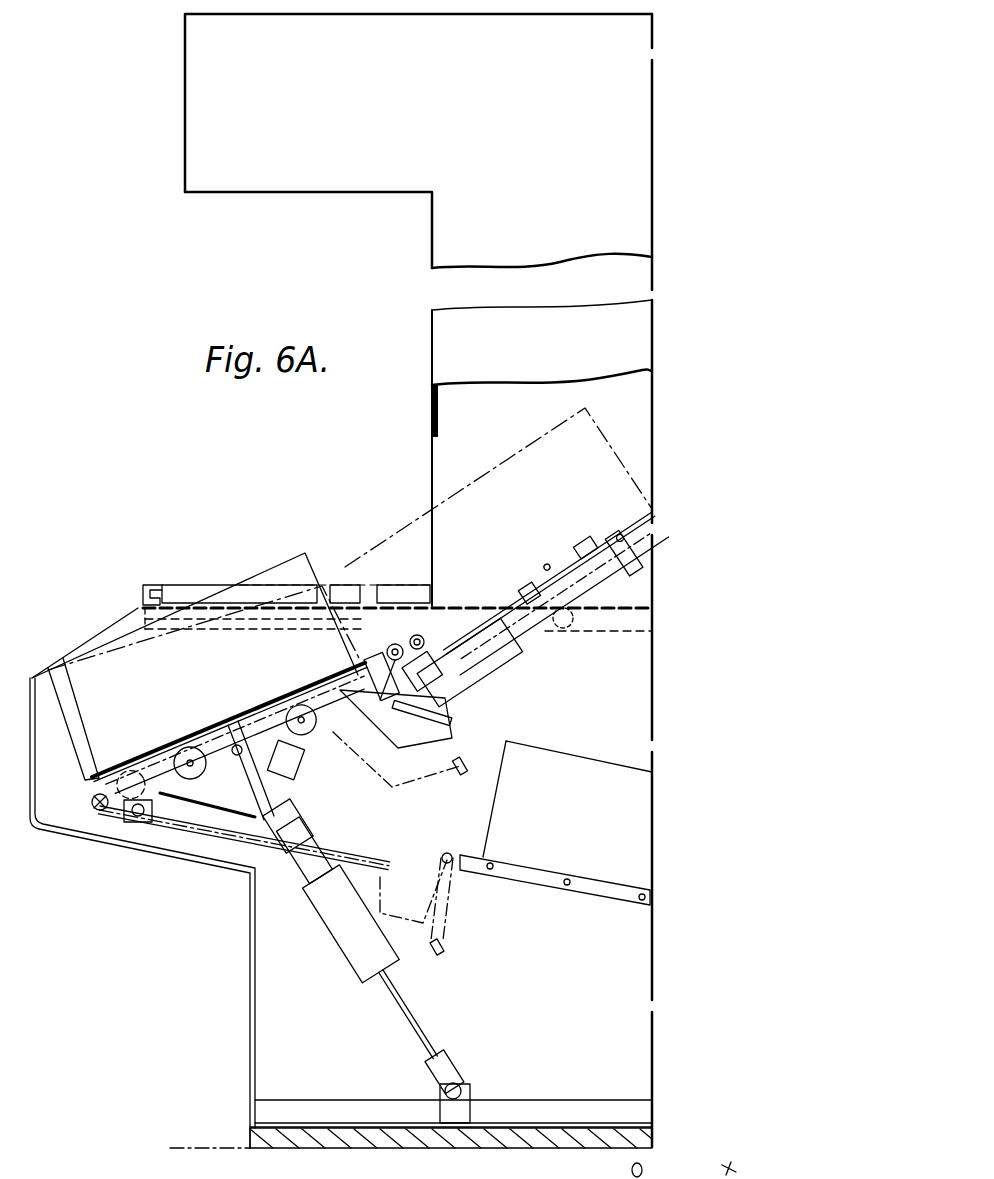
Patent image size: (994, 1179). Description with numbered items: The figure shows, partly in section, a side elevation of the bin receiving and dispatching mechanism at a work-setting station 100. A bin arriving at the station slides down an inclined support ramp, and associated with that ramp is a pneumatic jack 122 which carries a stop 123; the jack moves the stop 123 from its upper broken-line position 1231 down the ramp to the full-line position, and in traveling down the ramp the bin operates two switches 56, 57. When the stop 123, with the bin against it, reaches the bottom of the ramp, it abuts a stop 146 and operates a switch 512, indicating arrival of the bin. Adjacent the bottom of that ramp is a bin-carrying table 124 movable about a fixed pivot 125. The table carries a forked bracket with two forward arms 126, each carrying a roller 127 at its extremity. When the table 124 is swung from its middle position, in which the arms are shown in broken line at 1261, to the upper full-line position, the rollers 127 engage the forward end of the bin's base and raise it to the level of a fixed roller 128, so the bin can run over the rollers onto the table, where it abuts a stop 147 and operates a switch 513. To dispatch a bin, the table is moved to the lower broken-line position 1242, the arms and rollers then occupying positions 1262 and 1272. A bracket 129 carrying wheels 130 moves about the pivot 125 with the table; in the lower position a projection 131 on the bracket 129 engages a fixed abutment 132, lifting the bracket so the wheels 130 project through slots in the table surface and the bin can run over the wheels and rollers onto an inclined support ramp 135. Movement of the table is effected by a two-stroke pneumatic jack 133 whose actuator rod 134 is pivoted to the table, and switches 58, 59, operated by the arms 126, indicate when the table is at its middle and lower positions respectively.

The work-setting station 100 is at (445, 322).
The pneumatic jack 122 is at (507, 667).
The stop 123 is at (423, 637).
The broken-line position of stop 1231 is at (547, 567).
The switch S6 56 is at (583, 557).
The switch S7 57 is at (530, 598).
The roller 127 is at (428, 622).
The fixed roller 128 is at (397, 643).
The switch S12 512 is at (392, 673).
The stop 146 is at (450, 717).
The forward arm 126 is at (420, 727).
The broken-line middle position of arms 1261 is at (410, 777).
The switch S8 58 is at (465, 770).
The lower position of rollers 1272 is at (450, 852).
The lower position of table 1242 is at (340, 838).
The lower position of arms 1262 is at (437, 920).
The switch S9 59 is at (443, 952).
The inclined support ramp 135 is at (603, 873).
The pneumatic jack 133 is at (340, 918).
The fixed abutment 132 is at (273, 887).
The wheel 130 is at (187, 767).
The fixed pivot 125 is at (97, 820).
The switch S13 513 is at (74, 795).
The stop 147 is at (77, 757).
The bin-carrying table 124 is at (193, 740).
The bracket 129 is at (236, 745).
The projection 131 is at (288, 757).
The actuator rod 134 is at (267, 795).